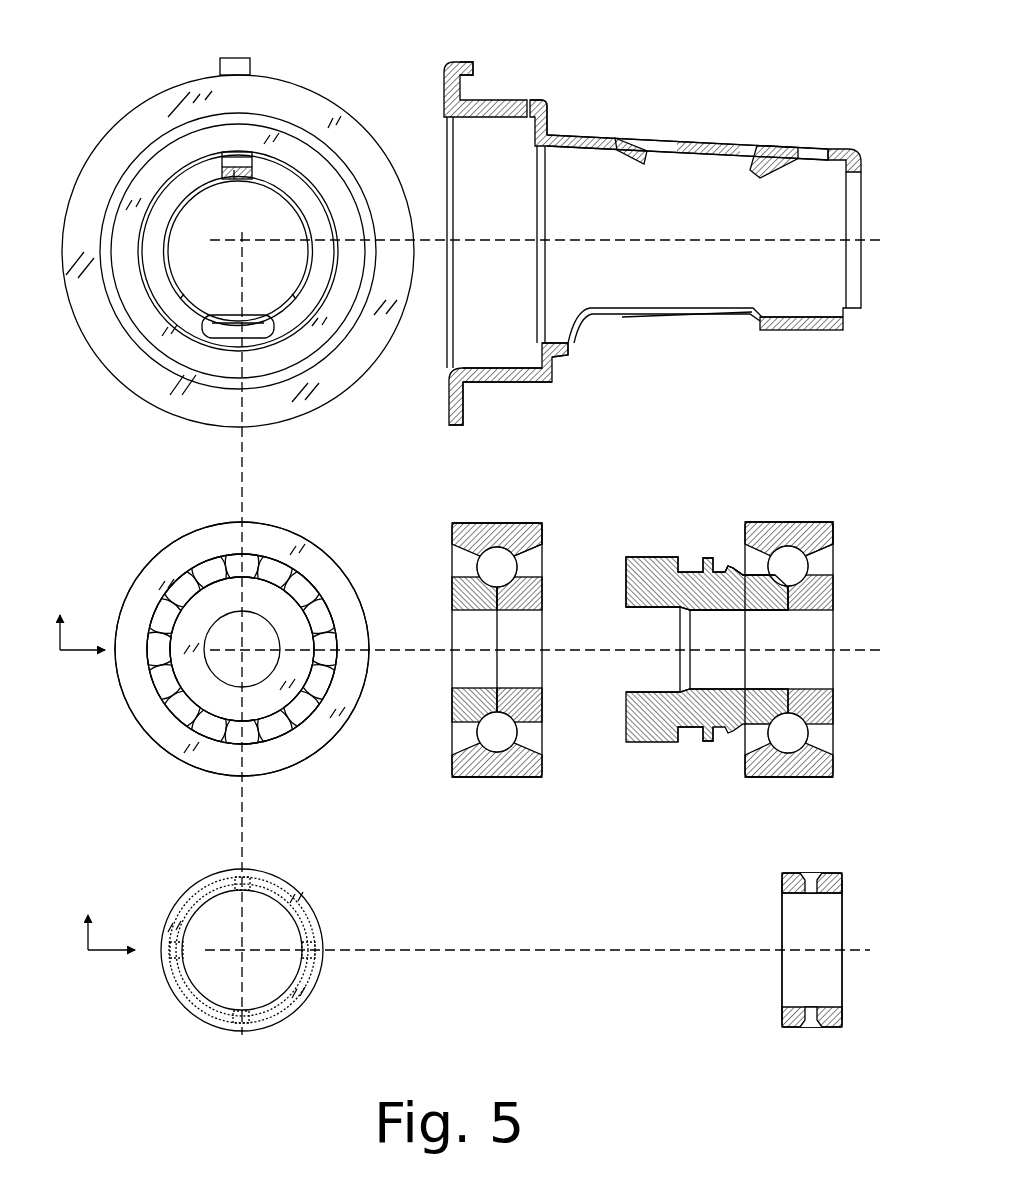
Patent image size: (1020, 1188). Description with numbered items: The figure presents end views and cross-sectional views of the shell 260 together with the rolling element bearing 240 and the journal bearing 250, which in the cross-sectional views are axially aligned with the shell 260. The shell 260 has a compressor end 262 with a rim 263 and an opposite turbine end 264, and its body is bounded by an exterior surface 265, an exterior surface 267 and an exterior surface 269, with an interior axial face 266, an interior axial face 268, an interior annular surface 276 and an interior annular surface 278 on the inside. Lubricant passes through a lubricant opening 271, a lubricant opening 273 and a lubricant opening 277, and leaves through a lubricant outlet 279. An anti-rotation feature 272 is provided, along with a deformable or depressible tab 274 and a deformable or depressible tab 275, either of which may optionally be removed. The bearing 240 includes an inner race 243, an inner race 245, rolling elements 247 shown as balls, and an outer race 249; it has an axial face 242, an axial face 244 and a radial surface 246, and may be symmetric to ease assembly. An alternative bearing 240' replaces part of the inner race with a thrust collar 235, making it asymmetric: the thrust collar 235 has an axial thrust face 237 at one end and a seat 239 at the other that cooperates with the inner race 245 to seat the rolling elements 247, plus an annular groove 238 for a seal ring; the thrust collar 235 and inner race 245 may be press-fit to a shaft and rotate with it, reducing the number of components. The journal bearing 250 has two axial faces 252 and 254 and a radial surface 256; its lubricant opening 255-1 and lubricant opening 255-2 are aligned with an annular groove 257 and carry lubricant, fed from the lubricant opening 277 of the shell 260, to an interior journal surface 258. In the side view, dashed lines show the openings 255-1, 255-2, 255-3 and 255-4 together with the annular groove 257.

The shell 260 is at (155, 42).
The compressor end 262 is at (170, 92).
The rim 263 is at (463, 420).
The turbine end 264 is at (861, 308).
The exterior surface 265 is at (498, 381).
The interior axial face 266 is at (175, 148).
The exterior surface 267 is at (557, 355).
The interior axial face 268 is at (185, 200).
The exterior surface 269 is at (800, 330).
The lubricant opening 271 is at (543, 101).
The anti-rotation feature 272 is at (247, 59).
The lubricant opening 273 is at (663, 139).
The deformable or depressible tab 274 is at (242, 179).
The deformable or depressible tab 275 is at (234, 170).
The interior annular surface 276 is at (488, 367).
The lubricant opening 277 is at (830, 149).
The interior annular surface 278 is at (785, 316).
The lubricant outlet 279 is at (208, 326).
The bearing 240 is at (301, 632).
The alternative bearing 240' is at (729, 621).
The thrust collar 235 is at (663, 557).
The axial thrust face 237 is at (627, 713).
The annular groove 238 is at (681, 736).
The seat 239 is at (760, 572).
The axial face 242 is at (455, 766).
The inner race 243 is at (178, 664).
The axial face 244 is at (541, 766).
The inner race 245 is at (535, 592).
The radial surface 246 is at (500, 774).
The rolling elements 247 is at (168, 692).
The outer race 249 is at (157, 742).
The bearing 250 is at (170, 870).
The axial face 252 is at (182, 996).
The axial face 254 is at (842, 1015).
The lubricant opening 255-1 is at (250, 884).
The lubricant opening 255-2 is at (235, 1024).
The opening 255-3 is at (322, 940).
The opening 255-4 is at (182, 958).
The radial surface 256 is at (792, 874).
The annular groove 257 is at (314, 976).
The interior journal surface 258 is at (795, 894).